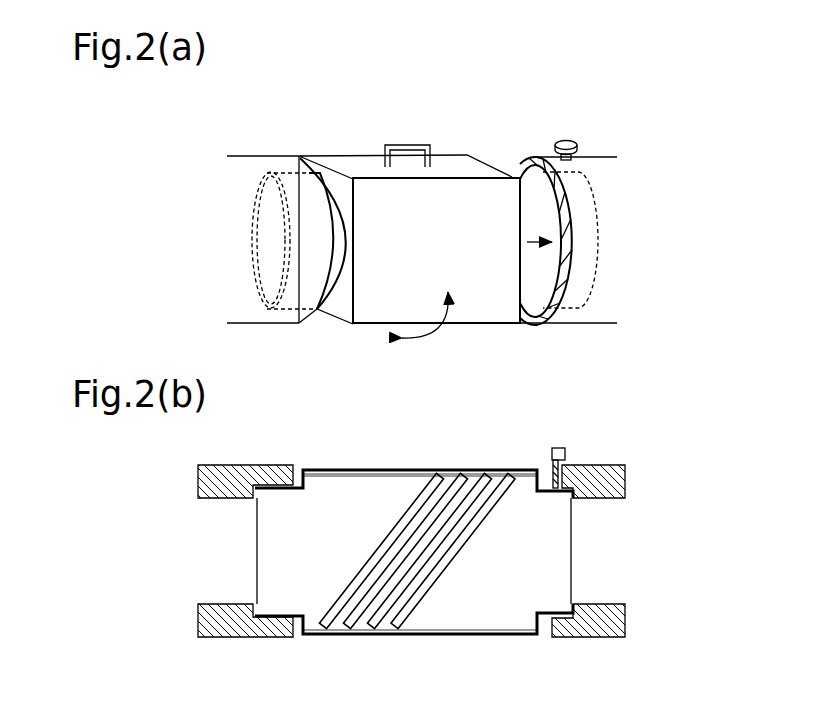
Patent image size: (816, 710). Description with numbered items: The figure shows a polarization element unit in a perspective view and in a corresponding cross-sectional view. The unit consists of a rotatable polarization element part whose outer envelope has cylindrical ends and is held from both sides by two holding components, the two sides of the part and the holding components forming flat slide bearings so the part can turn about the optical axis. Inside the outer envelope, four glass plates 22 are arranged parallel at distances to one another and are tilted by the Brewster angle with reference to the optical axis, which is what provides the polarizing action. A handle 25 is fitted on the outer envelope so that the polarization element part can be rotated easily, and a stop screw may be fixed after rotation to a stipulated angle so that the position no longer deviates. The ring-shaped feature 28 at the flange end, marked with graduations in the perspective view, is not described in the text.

The glass plates 22 is at (427, 606).
The handle 25 is at (430, 150).
The flange ring 28 is at (555, 192).